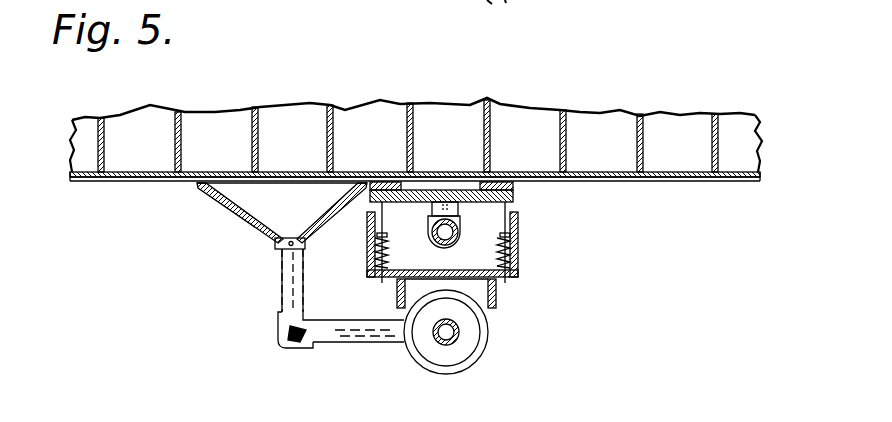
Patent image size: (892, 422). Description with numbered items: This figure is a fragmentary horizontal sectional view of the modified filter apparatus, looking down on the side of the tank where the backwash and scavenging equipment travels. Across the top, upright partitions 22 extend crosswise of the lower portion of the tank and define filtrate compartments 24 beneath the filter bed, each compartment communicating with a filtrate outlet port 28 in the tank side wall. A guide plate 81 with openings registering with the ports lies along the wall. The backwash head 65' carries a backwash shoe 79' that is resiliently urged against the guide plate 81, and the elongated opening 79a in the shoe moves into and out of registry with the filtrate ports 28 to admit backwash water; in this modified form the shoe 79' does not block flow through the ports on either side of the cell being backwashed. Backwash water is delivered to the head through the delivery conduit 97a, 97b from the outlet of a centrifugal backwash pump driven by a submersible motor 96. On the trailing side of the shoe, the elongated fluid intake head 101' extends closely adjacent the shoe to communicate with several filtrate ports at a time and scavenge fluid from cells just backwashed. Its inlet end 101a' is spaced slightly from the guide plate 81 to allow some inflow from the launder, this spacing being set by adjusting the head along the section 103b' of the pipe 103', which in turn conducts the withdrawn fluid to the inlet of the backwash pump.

The partitions 22 is at (339, 117).
The filtrate compartments 24 is at (594, 133).
The filtrate outlet ports 28 is at (589, 181).
The guide plate 81 is at (643, 183).
The inlet end of fluid intake head 101a' is at (282, 157).
The fluid intake head 101' is at (277, 227).
The pipe section 103b' is at (256, 275).
The pipe 103' is at (341, 351).
The motor 96 is at (478, 349).
The delivery conduit 97a is at (459, 332).
The elongated opening 79a is at (400, 190).
The backwash shoe 79' is at (415, 232).
The backwash head 65' is at (486, 237).
The delivery conduit 97b is at (458, 228).